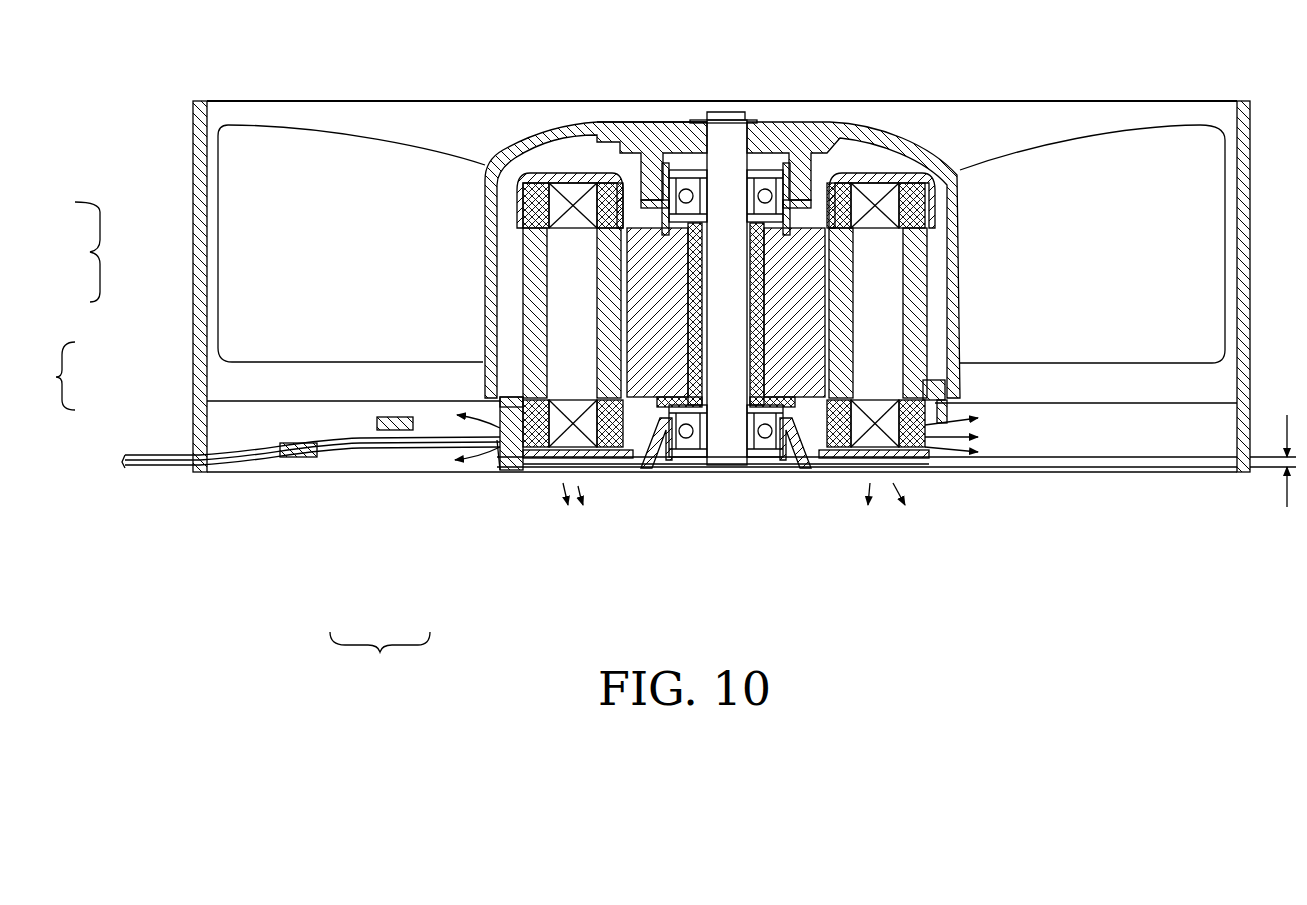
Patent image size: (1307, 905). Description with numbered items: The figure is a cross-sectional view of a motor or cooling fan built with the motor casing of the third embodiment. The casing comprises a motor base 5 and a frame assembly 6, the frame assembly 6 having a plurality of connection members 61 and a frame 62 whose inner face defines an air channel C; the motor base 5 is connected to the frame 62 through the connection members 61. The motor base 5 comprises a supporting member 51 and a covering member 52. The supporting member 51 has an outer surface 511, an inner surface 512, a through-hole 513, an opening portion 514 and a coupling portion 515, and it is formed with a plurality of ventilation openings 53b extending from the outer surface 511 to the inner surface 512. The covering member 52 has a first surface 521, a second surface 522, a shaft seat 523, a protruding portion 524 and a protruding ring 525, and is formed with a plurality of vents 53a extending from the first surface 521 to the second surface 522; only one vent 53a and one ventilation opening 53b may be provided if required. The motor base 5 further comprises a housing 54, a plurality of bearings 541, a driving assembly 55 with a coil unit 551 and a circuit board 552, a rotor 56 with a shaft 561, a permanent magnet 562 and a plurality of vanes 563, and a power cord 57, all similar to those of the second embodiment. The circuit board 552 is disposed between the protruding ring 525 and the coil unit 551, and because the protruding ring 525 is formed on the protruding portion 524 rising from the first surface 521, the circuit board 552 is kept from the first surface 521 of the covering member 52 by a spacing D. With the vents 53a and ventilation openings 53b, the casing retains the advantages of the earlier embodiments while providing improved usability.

The motor base 5 is at (667, 344).
The supporting member 51 is at (781, 494).
The outer surface 511 is at (940, 387).
The inner surface 512 is at (920, 470).
The through-hole 513 is at (613, 470).
The opening portion 514 is at (537, 490).
The coupling portion 515 is at (940, 410).
The covering member 52 is at (707, 507).
The first surface 521 is at (863, 470).
The second surface 522 is at (820, 470).
The shaft seat 523 is at (792, 470).
The protruding portion 524 is at (933, 470).
The protruding ring 525 is at (970, 470).
The vents 53a is at (592, 490).
The ventilation openings 53b is at (550, 490).
The housing 54 is at (773, 272).
The bearings 541 is at (777, 183).
The driving assembly 55 is at (486, 310).
The coil unit 551 is at (530, 286).
The circuit board 552 is at (500, 445).
The rotor 56 is at (653, 133).
The shaft 561 is at (725, 143).
The permanent magnet 562 is at (640, 233).
The vanes 563 is at (318, 137).
The power cord 57 is at (160, 467).
The frame assembly 6 is at (644, 286).
The connection members 61 is at (240, 408).
The frame 62 is at (190, 337).
The air channel C is at (452, 115).
The spacing D is at (1273, 470).